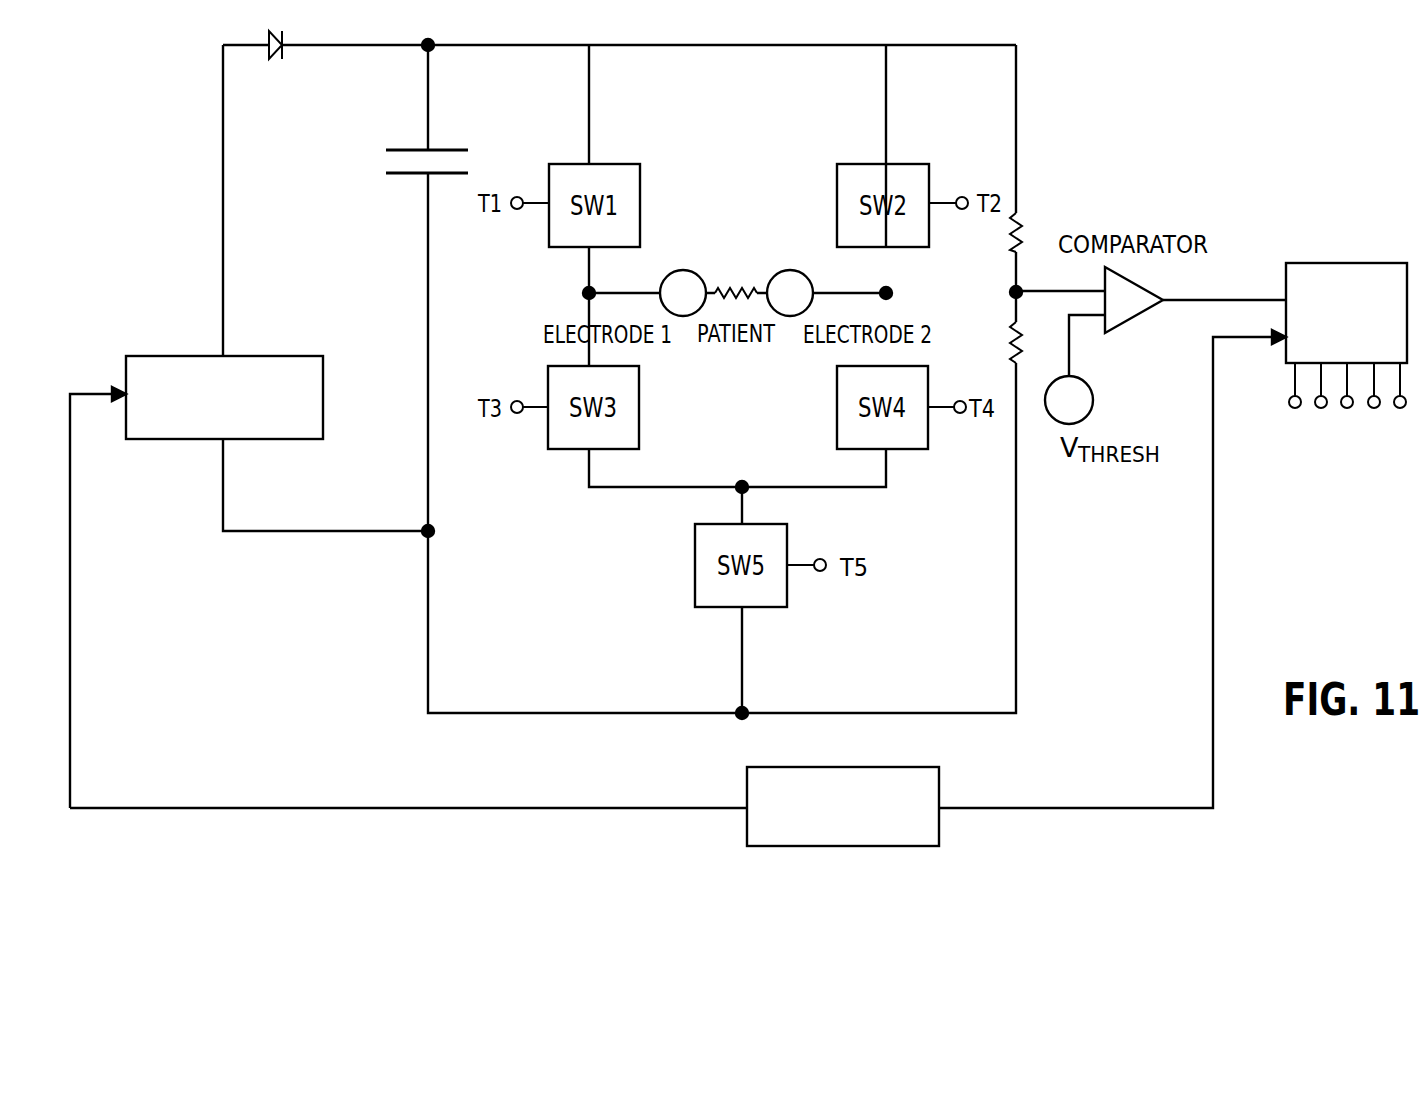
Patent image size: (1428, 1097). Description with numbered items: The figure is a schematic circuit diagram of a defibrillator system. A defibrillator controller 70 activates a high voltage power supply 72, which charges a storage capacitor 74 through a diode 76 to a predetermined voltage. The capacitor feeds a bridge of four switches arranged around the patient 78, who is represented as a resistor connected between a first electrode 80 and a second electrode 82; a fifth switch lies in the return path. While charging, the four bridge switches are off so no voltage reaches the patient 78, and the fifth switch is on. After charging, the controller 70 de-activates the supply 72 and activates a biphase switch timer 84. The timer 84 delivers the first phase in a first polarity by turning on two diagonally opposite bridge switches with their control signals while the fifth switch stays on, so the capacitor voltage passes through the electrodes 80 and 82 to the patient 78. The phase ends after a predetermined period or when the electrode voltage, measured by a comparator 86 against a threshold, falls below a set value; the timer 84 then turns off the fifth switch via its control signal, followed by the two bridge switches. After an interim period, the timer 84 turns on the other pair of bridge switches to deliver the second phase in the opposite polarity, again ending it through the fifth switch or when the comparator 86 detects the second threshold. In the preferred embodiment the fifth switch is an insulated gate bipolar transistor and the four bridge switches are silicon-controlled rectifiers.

The defibrillator controller 70 is at (763, 777).
The high voltage power supply 72 is at (293, 356).
The storage capacitor 74 is at (455, 150).
The diode 76 is at (285, 50).
The patient 78 is at (722, 290).
The electrode 80 is at (690, 277).
The electrode 82 is at (783, 277).
The biphase switch timer 84 is at (1306, 268).
The comparator 86 is at (1134, 312).